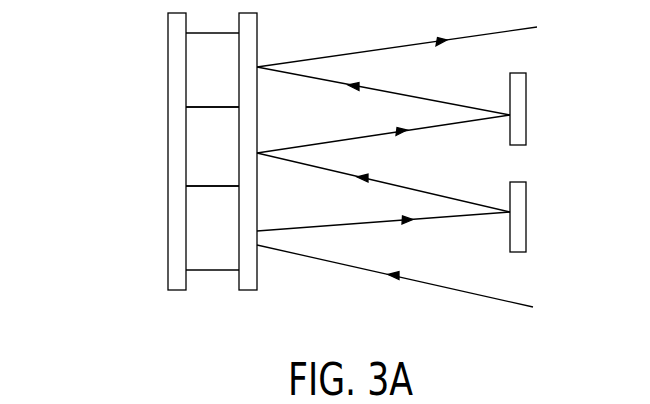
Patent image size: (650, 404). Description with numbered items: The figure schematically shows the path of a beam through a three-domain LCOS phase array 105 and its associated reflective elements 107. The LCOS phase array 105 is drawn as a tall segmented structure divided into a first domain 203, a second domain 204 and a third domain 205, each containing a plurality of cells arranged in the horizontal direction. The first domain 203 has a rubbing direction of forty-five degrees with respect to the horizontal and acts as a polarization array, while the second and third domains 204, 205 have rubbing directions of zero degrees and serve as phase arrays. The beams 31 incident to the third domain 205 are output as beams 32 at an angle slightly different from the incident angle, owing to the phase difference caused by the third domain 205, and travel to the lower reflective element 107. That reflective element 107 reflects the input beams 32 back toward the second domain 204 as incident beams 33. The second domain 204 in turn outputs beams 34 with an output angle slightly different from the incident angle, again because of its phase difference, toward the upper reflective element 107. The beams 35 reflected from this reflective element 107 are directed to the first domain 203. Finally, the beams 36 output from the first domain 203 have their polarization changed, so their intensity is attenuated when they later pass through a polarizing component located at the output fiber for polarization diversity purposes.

The LCOS phase array 105 is at (168, 44).
The first domain 203 is at (197, 85).
The second domain 204 is at (198, 153).
The third domain 205 is at (197, 238).
The reflective element 107 is at (526, 109).
The beams incident to the third domain 31 is at (375, 273).
The output beams from the third domain 32 is at (383, 222).
The incident beams to the second domain 33 is at (310, 166).
The output beams from the second domain 34 is at (388, 134).
The beams reflected from the reflective element 35 is at (338, 84).
The output beams from the first domain 36 is at (386, 51).